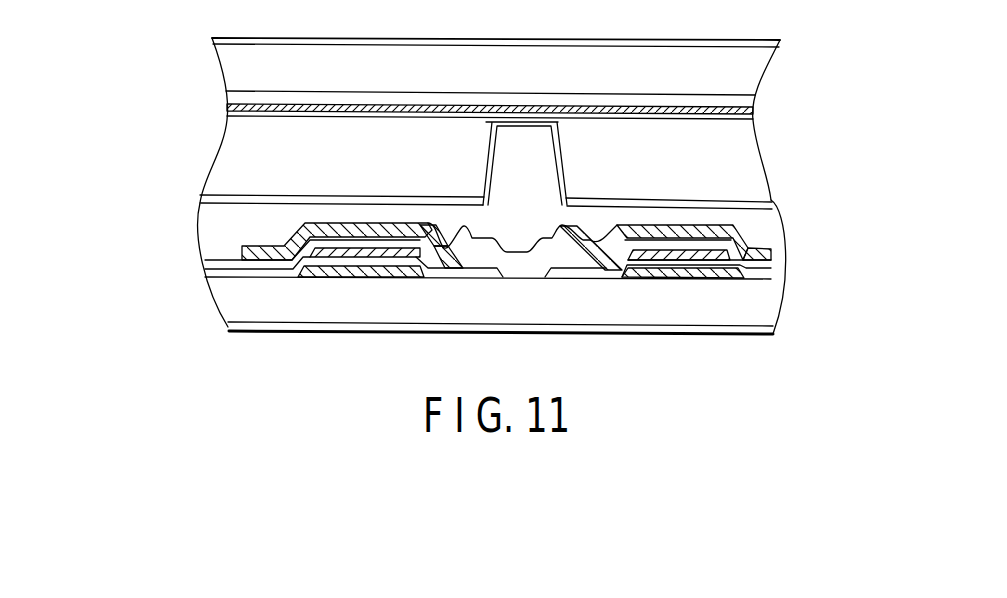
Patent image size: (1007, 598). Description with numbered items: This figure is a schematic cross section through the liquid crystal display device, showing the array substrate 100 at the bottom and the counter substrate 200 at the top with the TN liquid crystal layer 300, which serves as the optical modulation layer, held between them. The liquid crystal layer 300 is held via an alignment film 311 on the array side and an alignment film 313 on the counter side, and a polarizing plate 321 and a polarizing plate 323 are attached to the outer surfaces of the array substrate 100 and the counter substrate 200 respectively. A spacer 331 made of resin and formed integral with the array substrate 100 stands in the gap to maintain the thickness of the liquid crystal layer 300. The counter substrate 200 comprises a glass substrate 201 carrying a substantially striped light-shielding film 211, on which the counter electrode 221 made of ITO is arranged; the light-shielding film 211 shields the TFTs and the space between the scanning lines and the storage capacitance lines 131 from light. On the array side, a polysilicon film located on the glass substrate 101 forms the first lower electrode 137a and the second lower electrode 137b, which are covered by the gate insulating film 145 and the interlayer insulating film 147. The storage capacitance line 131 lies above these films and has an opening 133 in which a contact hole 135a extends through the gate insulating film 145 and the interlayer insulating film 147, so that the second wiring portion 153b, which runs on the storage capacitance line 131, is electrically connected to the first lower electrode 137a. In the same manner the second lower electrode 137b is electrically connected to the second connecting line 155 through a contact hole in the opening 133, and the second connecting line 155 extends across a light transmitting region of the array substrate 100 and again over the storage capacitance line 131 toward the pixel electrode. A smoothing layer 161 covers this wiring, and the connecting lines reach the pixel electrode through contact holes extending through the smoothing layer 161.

The array substrate 100 is at (202, 312).
The glass substrate 101 is at (760, 310).
The storage capacitance line 131 is at (332, 258).
The opening 133 is at (430, 256).
The contact hole 135a is at (426, 234).
The first lower electrode 137a is at (382, 276).
The second lower electrode 137b is at (640, 282).
The gate insulating film 145 is at (258, 277).
The interlayer insulating film 147 is at (212, 265).
The second wiring portion 153b is at (242, 253).
The second connecting line 155 is at (775, 255).
The smoothing layer 161 is at (782, 233).
The counter substrate 200 is at (205, 67).
The glass substrate 201 is at (758, 65).
The light-shielding film 211 is at (753, 97).
The counter electrode 221 is at (753, 110).
The liquid crystal layer 300 is at (765, 170).
The alignment film 311 is at (770, 197).
The alignment film 313 is at (755, 120).
The polarizing plate 321 is at (752, 336).
The polarizing plate 323 is at (762, 41).
The spacer 331 is at (550, 157).